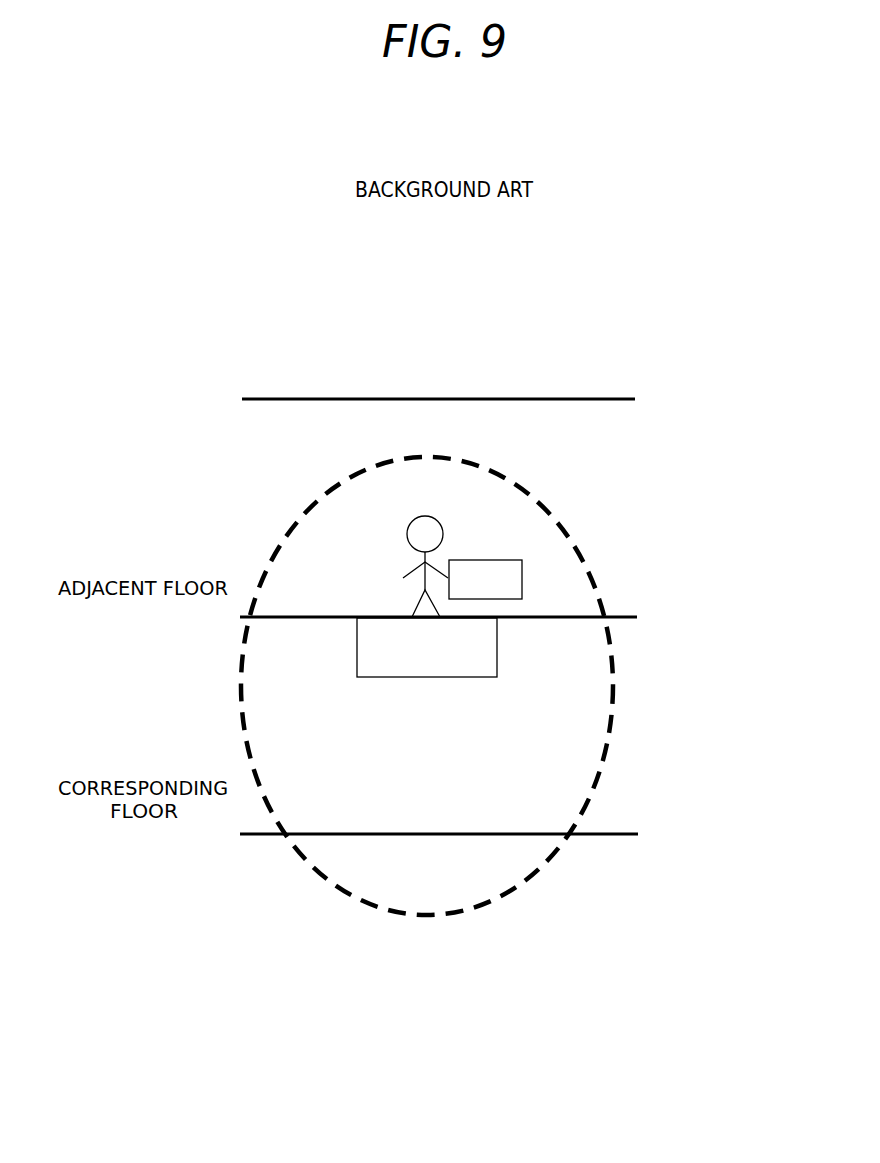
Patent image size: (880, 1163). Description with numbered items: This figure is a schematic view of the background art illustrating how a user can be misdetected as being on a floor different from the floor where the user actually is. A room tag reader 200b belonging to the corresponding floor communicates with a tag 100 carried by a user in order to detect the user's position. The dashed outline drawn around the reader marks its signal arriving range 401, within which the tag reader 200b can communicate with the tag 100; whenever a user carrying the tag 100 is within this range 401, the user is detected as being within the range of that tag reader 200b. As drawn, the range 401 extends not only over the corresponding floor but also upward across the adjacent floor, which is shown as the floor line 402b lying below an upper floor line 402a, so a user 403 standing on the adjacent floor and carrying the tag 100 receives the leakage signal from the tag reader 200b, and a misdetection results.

The floor (upper floor line) 402a is at (635, 399).
The signal arriving range 401 is at (532, 500).
The person carrying tag 403 is at (438, 522).
The tag 100 is at (522, 575).
The adjacent floor 402b is at (637, 617).
The tag reader 200b is at (497, 648).